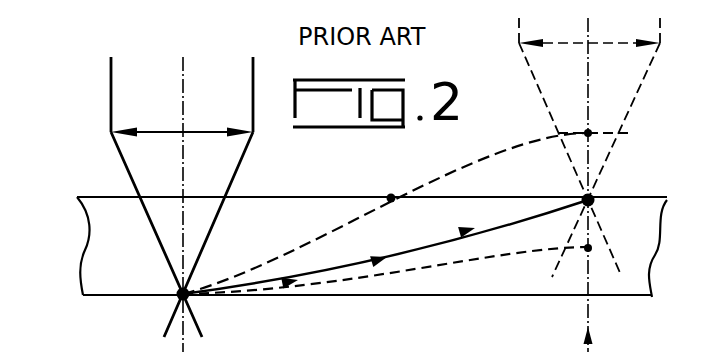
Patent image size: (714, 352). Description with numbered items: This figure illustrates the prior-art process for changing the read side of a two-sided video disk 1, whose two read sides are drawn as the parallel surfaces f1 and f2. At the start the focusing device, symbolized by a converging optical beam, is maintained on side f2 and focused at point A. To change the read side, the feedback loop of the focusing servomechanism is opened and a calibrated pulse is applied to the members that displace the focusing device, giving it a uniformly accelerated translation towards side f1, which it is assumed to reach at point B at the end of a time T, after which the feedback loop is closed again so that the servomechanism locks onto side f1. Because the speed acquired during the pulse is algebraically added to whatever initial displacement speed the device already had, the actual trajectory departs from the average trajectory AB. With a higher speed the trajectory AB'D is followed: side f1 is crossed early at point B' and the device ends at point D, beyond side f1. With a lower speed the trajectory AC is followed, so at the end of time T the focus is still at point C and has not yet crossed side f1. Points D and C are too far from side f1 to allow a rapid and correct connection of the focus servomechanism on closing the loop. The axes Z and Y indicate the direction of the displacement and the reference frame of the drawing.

The video disk 1 is at (100, 244).
The side f1 of the video disk f1 is at (103, 196).
The side f2 of the video disk f2 is at (101, 297).
The point A is at (178, 297).
The point B is at (409, 230).
The point B' is at (374, 183).
The point C is at (589, 250).
The point D is at (591, 130).
The Z coordinate axis Z is at (598, 185).
The Y coordinate axis Y is at (626, 347).